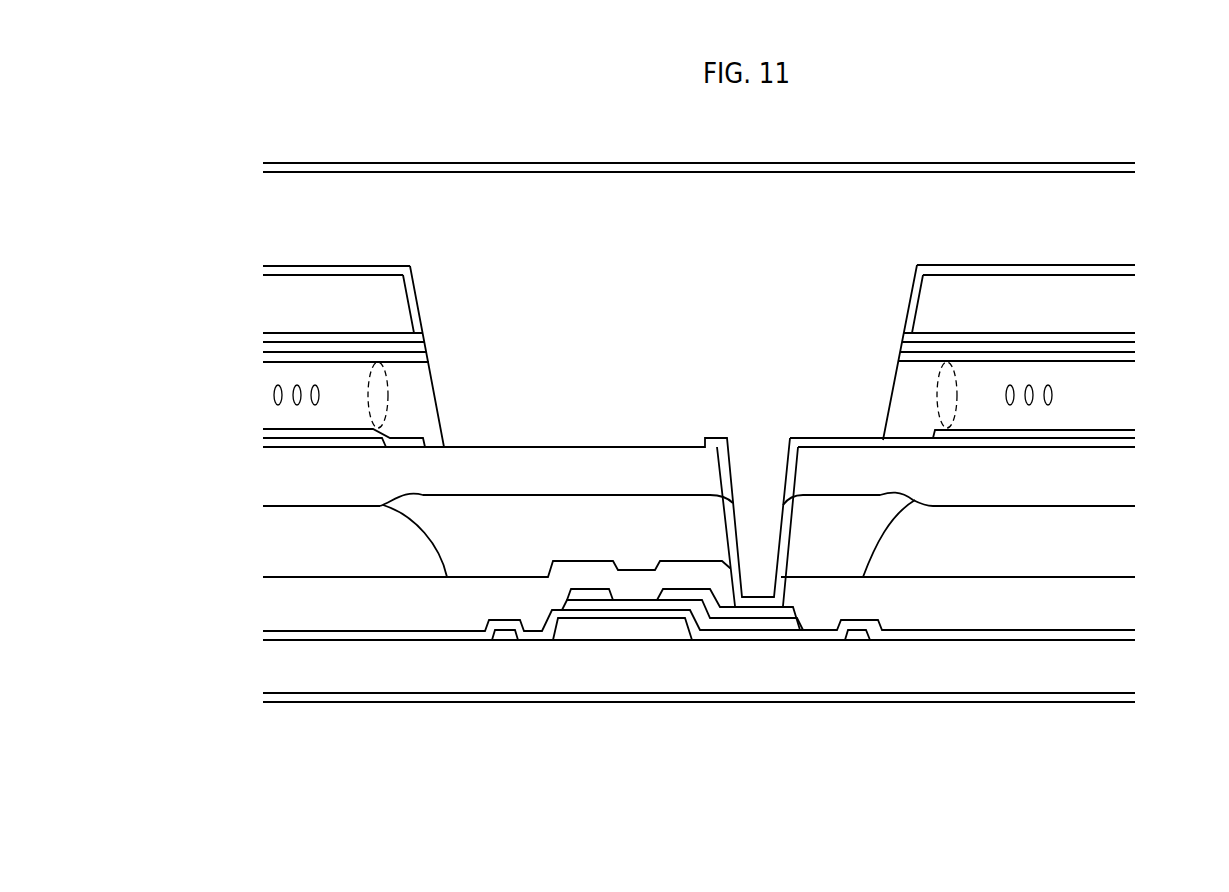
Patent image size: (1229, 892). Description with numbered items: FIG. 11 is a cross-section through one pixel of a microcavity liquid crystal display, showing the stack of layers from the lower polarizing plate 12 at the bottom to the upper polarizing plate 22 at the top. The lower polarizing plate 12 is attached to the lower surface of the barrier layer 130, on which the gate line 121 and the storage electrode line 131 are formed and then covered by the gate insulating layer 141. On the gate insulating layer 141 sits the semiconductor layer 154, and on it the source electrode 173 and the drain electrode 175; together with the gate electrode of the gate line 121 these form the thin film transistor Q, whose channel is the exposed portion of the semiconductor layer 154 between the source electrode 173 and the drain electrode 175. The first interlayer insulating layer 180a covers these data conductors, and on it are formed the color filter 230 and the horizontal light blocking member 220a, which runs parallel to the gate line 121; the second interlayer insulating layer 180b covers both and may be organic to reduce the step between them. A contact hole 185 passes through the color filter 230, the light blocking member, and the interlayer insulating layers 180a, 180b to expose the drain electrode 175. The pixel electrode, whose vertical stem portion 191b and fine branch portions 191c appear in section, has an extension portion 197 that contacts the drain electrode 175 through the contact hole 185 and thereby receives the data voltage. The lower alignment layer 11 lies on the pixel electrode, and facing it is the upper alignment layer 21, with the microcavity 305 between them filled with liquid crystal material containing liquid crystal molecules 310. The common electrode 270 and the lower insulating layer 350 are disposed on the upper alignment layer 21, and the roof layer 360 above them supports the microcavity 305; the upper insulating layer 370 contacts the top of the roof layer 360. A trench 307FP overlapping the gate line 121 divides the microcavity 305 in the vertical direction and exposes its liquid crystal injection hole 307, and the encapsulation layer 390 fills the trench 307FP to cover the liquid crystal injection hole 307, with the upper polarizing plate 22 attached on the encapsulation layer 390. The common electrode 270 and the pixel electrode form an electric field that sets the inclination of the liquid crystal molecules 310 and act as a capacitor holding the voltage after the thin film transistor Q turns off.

The upper polarizing plate 22 is at (1137, 168).
The encapsulation layer 390 is at (1125, 222).
The upper insulating layer 370 is at (1137, 268).
The roof layer 360 is at (1125, 304).
The liquid crystal injection hole 307 is at (392, 356).
The trench 307FP is at (606, 318).
The lower insulating layer 350 is at (1137, 333).
The common electrode 270 is at (1137, 348).
The upper alignment layer 21 is at (1137, 360).
The microcavity 305 is at (1125, 395).
The liquid crystal molecule 310 is at (270, 393).
The lower alignment layer 11 is at (1137, 432).
The fine branch portions 191c is at (262, 440).
The vertical stem portion 191b is at (1137, 447).
The extension portion 197 is at (831, 438).
The contact hole 185 is at (755, 432).
The second interlayer insulating layer 180b is at (278, 473).
The color filter 230 is at (278, 543).
The horizontal light blocking member 220a is at (474, 537).
The first interlayer insulating layer 180a is at (1125, 600).
The drain electrode 175 is at (690, 595).
The semiconductor layer 154 is at (642, 605).
The source electrode 173 is at (597, 593).
The gate line 121 is at (565, 627).
The gate insulating layer 141 is at (1137, 635).
The storage electrode line 131 is at (503, 633).
The barrier layer 130 is at (1125, 667).
The lower polarizing plate 12 is at (1137, 700).
The thin film transistor Q is at (708, 742).